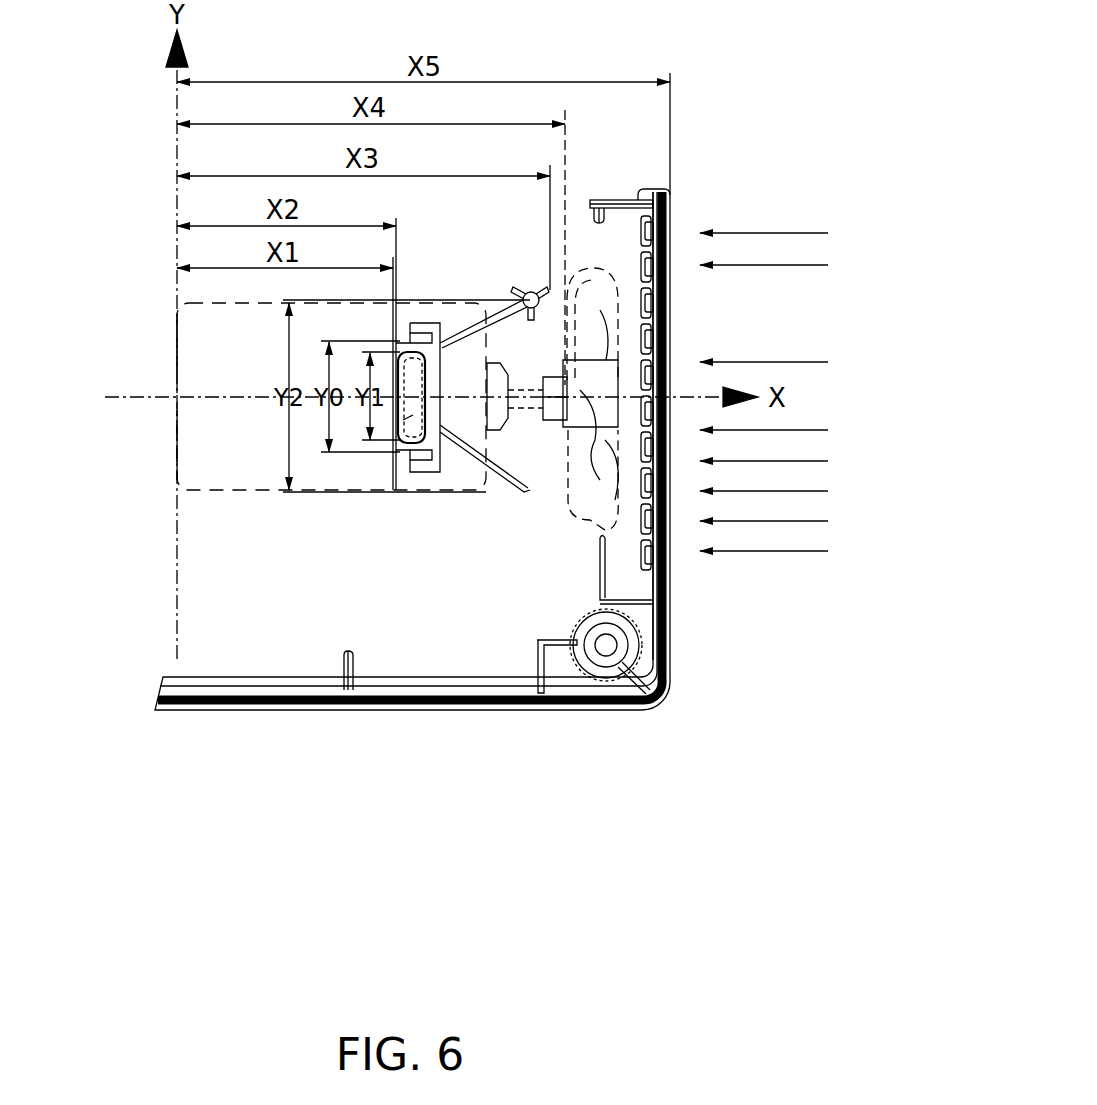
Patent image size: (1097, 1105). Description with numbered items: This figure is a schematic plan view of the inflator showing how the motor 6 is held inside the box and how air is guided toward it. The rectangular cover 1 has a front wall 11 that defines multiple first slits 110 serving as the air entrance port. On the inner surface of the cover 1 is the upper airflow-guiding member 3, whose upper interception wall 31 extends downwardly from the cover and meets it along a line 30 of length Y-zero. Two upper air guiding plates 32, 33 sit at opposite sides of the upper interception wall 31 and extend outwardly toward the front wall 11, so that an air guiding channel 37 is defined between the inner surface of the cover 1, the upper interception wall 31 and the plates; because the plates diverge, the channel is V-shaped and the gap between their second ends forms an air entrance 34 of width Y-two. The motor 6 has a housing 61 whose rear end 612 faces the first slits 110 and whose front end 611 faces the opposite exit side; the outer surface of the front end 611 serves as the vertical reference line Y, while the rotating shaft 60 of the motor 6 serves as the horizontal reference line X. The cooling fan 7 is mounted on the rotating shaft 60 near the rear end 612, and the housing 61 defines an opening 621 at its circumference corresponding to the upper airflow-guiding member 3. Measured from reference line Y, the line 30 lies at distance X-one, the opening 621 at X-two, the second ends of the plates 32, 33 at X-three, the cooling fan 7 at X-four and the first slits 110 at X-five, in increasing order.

The cover 1 is at (220, 707).
The upper airflow-guiding member 3 is at (427, 468).
The motor 6 is at (248, 478).
The cooling fan 7 is at (585, 280).
The front wall 11 is at (667, 635).
The line 30 is at (397, 428).
The upper interception wall 31 is at (433, 418).
The upper air guiding plate 32 is at (525, 492).
The upper air guiding plate 33 is at (523, 357).
The air entrance 34 is at (480, 380).
The air guiding channel 37 is at (578, 368).
The rotating shaft 60 is at (532, 400).
The housing 61 is at (190, 435).
The first slits 110 is at (658, 575).
The front end 611 is at (177, 352).
The rear end 612 is at (497, 347).
The opening 621 is at (406, 430).